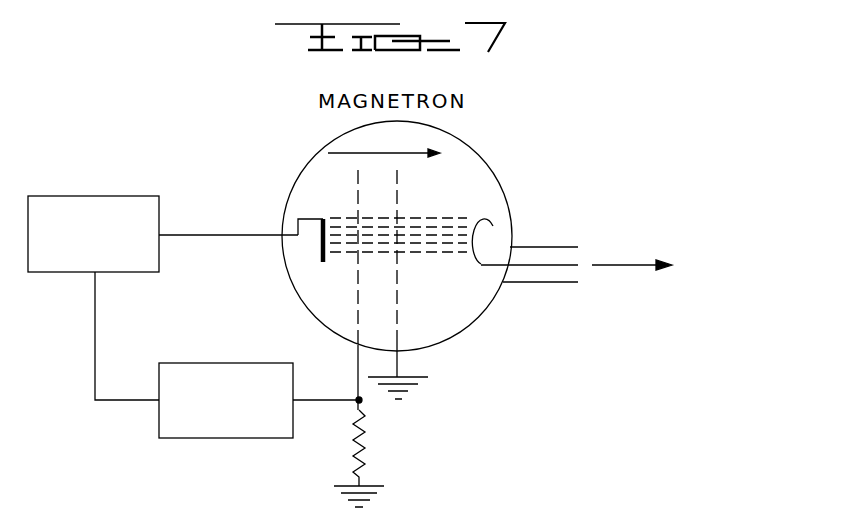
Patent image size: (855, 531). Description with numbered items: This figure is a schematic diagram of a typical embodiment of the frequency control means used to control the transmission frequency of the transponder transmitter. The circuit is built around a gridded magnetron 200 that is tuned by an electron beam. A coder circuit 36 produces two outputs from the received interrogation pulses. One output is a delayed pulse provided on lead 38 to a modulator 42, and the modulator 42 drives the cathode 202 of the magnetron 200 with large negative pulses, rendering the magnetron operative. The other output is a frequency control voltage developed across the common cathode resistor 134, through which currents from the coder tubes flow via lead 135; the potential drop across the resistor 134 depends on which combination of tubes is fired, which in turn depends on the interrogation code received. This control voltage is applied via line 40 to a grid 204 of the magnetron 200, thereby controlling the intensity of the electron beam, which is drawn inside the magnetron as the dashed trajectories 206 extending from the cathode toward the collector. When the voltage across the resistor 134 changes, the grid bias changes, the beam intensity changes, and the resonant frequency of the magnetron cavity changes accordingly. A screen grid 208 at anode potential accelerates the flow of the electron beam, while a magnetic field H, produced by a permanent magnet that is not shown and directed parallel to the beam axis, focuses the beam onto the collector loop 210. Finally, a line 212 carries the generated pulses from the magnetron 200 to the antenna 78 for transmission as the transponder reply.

The gridded magnetron 200 is at (490, 159).
The cathode 202 is at (323, 250).
The grid 204 is at (358, 313).
The electron trajectories 206 is at (347, 263).
The screen grid 208 is at (397, 323).
The collector loop 210 is at (480, 268).
The line 212 is at (532, 282).
The antenna 78 is at (683, 267).
The modulator 42 is at (65, 195).
The lead 38 is at (94, 336).
The coder circuit 36 is at (200, 361).
The line 40 is at (357, 390).
The lead 135 is at (329, 403).
The common cathode resistor 134 is at (364, 441).